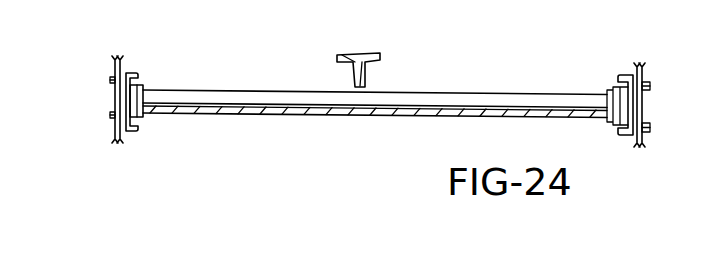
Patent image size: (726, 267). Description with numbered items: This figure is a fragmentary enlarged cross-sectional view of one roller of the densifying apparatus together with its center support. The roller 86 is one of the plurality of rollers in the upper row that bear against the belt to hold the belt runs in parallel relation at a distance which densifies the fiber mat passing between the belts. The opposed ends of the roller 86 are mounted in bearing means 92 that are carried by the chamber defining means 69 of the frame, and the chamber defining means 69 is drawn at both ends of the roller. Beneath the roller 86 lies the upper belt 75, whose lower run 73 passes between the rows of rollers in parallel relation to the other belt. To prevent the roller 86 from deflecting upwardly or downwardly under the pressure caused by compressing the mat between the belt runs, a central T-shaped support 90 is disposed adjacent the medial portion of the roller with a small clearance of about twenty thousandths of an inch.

The chamber defining means 69 is at (117, 101).
The lower run 73 is at (517, 118).
The upper belt 75 is at (302, 118).
The roller 86 is at (407, 105).
The T-shaped support 90 is at (338, 56).
The bearing means 92 is at (148, 75).